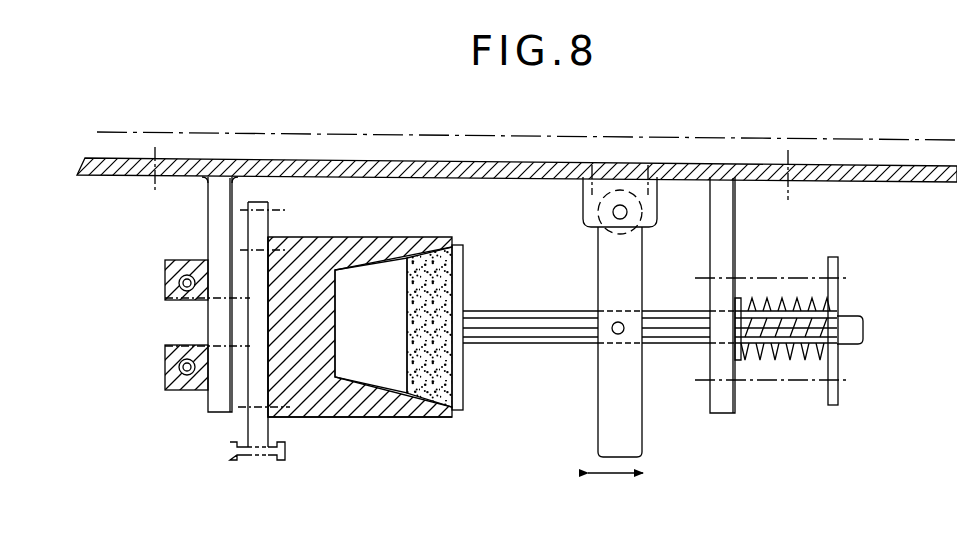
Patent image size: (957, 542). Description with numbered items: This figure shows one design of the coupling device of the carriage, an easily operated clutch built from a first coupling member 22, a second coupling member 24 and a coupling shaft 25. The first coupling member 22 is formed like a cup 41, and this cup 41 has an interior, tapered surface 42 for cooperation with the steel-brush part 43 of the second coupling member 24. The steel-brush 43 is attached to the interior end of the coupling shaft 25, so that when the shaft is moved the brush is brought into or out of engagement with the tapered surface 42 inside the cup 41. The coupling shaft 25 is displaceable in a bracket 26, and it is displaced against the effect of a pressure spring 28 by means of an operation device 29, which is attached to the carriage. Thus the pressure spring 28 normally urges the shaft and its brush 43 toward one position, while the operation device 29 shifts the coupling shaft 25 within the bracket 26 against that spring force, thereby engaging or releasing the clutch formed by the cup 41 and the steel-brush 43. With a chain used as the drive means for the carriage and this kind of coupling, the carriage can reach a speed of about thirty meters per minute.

The first coupling member 22 is at (363, 196).
The second coupling member 24 is at (519, 383).
The coupling shaft 25 is at (543, 327).
The bracket 26 is at (718, 405).
The pressure spring 28 is at (790, 356).
The operation device 29 is at (695, 438).
The cup 41 is at (300, 350).
The interior tapered surface 42 is at (372, 378).
The steel-brush 43 is at (431, 363).